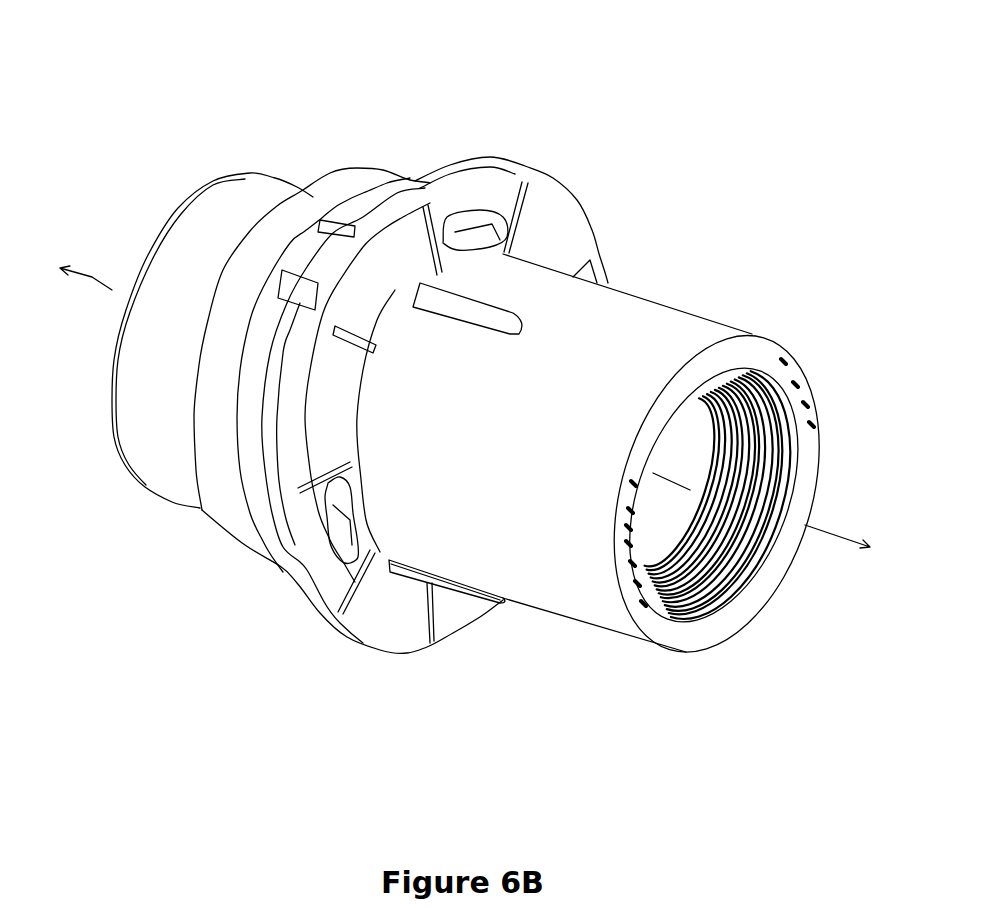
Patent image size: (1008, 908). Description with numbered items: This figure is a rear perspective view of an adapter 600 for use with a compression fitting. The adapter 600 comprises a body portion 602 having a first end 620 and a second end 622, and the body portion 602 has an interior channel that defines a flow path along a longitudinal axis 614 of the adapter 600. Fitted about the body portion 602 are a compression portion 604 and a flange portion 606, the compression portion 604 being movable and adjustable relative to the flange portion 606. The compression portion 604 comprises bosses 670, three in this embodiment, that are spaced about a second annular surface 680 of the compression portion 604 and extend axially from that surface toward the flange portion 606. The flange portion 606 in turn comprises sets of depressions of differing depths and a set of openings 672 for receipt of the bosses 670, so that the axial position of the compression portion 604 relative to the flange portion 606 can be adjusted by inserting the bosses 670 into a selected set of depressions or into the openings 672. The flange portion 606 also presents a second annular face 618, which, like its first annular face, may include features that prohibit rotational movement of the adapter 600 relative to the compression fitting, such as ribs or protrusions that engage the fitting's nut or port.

The adapter 600 is at (699, 122).
The body portion 602 is at (721, 313).
The compression portion 604 is at (381, 159).
The flange portion 606 is at (442, 640).
The longitudinal axis 614 is at (92, 277).
The second annular face 618 is at (443, 180).
The first end 620 is at (213, 154).
The second end 622 is at (629, 668).
The bosses 670 is at (318, 258).
The openings 672 is at (493, 222).
The second annular surface 680 is at (240, 450).